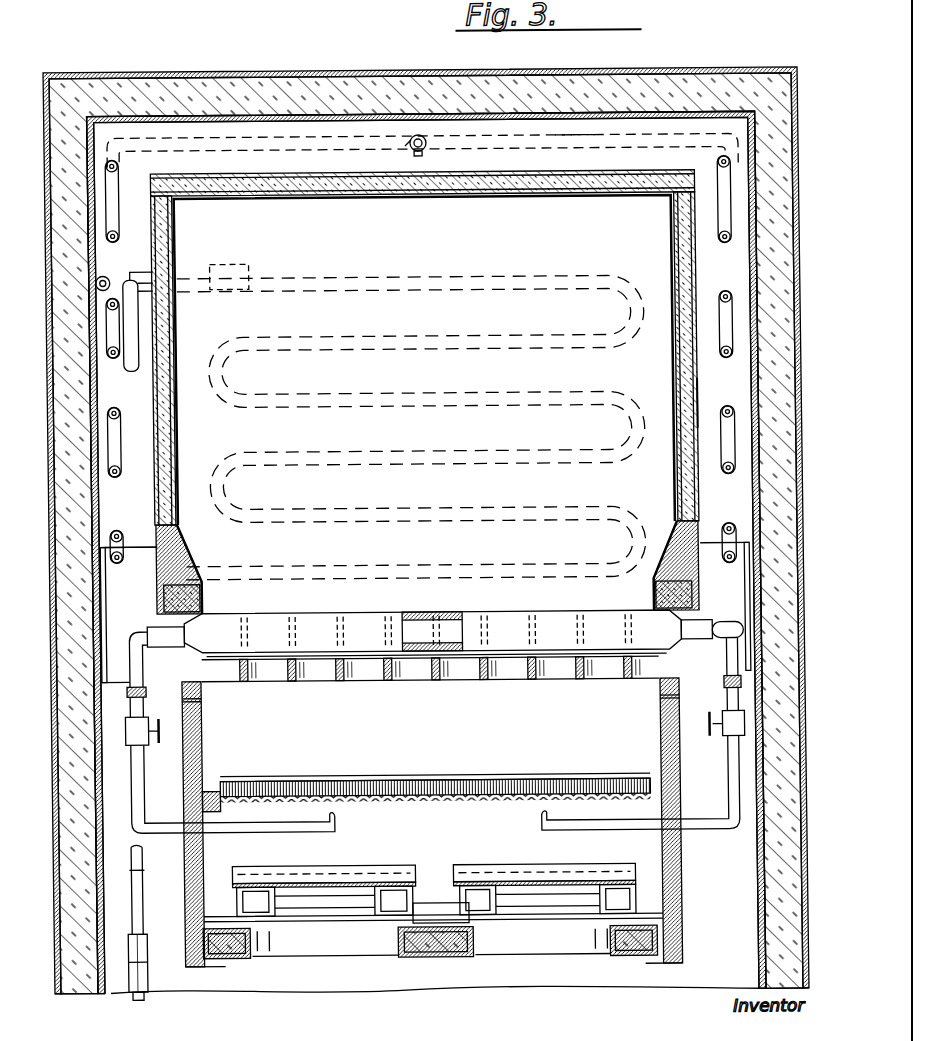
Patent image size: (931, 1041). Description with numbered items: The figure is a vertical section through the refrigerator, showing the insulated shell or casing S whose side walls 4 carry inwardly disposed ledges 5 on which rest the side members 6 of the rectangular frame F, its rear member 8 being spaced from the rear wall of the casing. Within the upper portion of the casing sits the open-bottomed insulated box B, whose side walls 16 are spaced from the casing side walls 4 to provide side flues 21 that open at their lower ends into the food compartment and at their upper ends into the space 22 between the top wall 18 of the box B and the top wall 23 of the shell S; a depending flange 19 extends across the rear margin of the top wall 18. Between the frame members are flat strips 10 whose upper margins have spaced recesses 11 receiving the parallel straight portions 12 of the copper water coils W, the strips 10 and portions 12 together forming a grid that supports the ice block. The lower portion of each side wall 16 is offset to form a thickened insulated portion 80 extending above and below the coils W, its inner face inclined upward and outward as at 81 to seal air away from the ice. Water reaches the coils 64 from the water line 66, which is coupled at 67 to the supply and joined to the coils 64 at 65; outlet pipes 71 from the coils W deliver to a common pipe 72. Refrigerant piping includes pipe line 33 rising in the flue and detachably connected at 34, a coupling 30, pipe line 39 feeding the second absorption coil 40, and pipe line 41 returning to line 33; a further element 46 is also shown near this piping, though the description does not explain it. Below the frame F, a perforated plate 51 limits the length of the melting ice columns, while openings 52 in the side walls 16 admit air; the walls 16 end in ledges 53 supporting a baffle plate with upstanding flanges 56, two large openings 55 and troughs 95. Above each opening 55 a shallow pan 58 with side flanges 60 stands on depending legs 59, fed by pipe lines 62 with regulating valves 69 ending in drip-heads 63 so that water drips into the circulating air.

The shell or casing S is at (227, 95).
The top wall of the shell or casing 23 is at (341, 78).
The top space 22 is at (675, 132).
The coupling 67 is at (413, 143).
The water line 66 is at (437, 148).
The communication connection of coils 65 is at (577, 151).
The depending flange or strip 19 is at (419, 197).
The top wall of the box 18 is at (493, 178).
The side flues 21 is at (709, 254).
The detachable connection 34 is at (163, 282).
The pipe line 41 is at (201, 272).
The control element 46 is at (253, 279).
The detachable coupling 30 is at (108, 266).
The pipe line 33 is at (145, 324).
The second absorption coil 40 is at (415, 340).
The coils 64 is at (725, 294).
The side walls of the box 16 is at (686, 358).
The box B is at (702, 414).
The side walls 4 is at (82, 388).
The side members of the frame 6 is at (99, 609).
The frame F is at (118, 519).
The rear member of the frame 8 is at (105, 543).
The inclined inner face 81 is at (192, 560).
The water coils W is at (364, 626).
The parallel straight portions of the water coils 12 is at (491, 625).
The spaced recesses 11 is at (542, 626).
The thickened insulated portion 80 is at (179, 598).
The pipe line 39 is at (217, 638).
The outlet pipes 71 is at (130, 647).
The strips or flat members 10 is at (273, 664).
The ledges 5 is at (138, 723).
The regulating valve 69 is at (137, 739).
The openings 52 is at (197, 745).
The perforated plate 51 is at (429, 775).
The pipe lines 62 is at (228, 832).
The drip-heads 63 is at (336, 837).
The pan 58 is at (368, 880).
The upstanding side flanges 60 is at (614, 872).
The upstanding flanges 56 is at (323, 904).
The depending legs 59 is at (595, 896).
The openings 55 is at (314, 937).
The troughs 95 is at (404, 934).
The inwardly disposed ledges 53 is at (204, 959).
The common pipe 72 is at (136, 996).